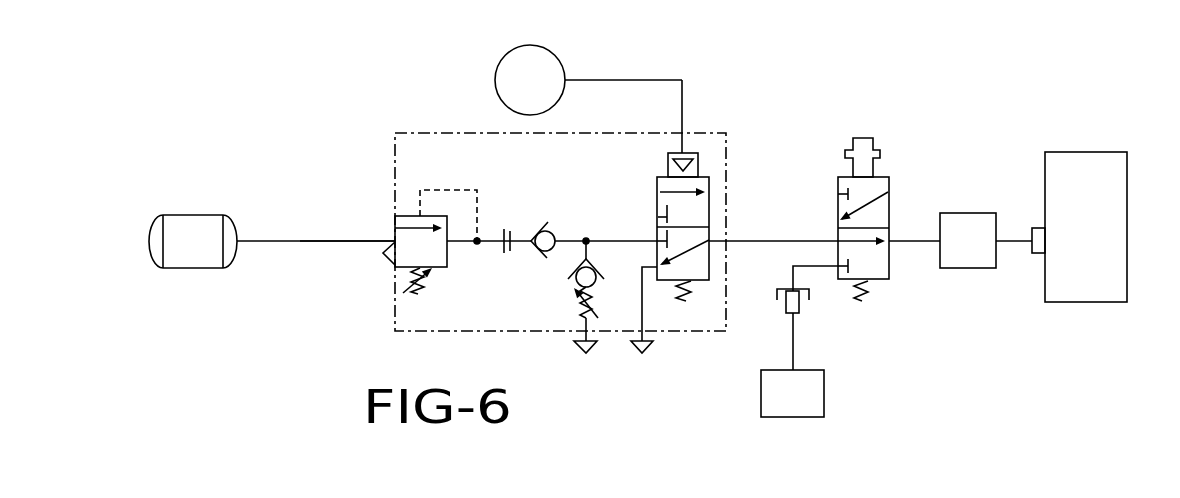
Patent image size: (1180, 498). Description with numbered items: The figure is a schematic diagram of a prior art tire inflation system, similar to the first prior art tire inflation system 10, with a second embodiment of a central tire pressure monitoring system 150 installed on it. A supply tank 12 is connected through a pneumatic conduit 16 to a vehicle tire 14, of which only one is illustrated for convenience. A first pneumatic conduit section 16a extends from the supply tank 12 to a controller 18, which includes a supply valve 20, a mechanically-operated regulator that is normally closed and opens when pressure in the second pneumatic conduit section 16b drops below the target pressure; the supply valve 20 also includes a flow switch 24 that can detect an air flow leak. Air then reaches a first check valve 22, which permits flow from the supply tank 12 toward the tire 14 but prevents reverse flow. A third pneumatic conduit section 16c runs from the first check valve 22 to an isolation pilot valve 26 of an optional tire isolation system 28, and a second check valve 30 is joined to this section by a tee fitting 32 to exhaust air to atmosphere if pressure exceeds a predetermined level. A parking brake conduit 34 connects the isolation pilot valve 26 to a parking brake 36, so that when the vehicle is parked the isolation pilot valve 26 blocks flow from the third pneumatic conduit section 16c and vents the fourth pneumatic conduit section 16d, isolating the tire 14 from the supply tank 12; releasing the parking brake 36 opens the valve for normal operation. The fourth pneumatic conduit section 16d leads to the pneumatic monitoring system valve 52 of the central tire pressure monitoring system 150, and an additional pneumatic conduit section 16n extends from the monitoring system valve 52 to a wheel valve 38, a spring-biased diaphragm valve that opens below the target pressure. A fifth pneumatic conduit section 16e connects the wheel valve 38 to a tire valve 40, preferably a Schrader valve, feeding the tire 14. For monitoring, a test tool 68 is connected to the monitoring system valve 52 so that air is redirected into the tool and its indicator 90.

The first prior art tire inflation system 10 is at (288, 145).
The supply tank 12 is at (205, 256).
The vehicle tire 14 is at (1087, 152).
The pneumatic conduit 16 is at (275, 238).
The first pneumatic conduit section 16a is at (328, 242).
The second pneumatic conduit section 16b is at (527, 241).
The third pneumatic conduit section 16c is at (622, 241).
The fourth pneumatic conduit section 16d is at (788, 241).
The fifth pneumatic conduit section 16e is at (1005, 241).
The additional pneumatic conduit section 16n is at (908, 241).
The controller 18 is at (392, 157).
The supply valve 20 is at (395, 266).
The first check valve 22 is at (533, 245).
The flow switch 24 is at (506, 228).
The isolation pilot valve 26 is at (709, 206).
The tire isolation system 28 is at (690, 102).
The second check valve 30 is at (597, 280).
The tee fitting 32 is at (583, 237).
The parking brake conduit 34 is at (652, 81).
The parking brake 36 is at (555, 52).
The wheel valve 38 is at (970, 213).
The tire valve 40 is at (1037, 254).
The pneumatic monitoring system valve 52 is at (888, 174).
The test tool 68 is at (812, 318).
The indicator 90 is at (824, 392).
The central tire pressure monitoring system 150 is at (961, 112).